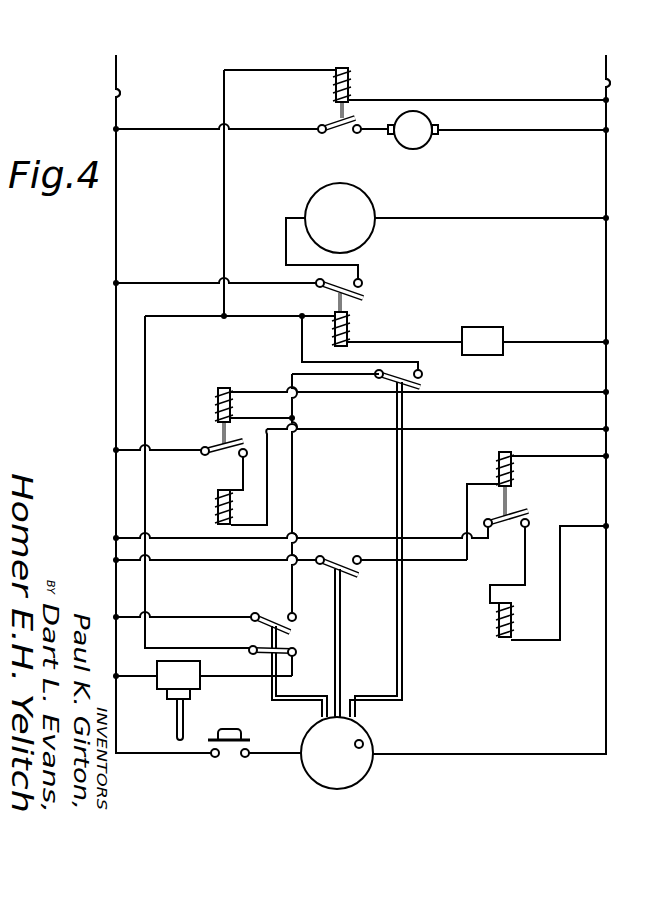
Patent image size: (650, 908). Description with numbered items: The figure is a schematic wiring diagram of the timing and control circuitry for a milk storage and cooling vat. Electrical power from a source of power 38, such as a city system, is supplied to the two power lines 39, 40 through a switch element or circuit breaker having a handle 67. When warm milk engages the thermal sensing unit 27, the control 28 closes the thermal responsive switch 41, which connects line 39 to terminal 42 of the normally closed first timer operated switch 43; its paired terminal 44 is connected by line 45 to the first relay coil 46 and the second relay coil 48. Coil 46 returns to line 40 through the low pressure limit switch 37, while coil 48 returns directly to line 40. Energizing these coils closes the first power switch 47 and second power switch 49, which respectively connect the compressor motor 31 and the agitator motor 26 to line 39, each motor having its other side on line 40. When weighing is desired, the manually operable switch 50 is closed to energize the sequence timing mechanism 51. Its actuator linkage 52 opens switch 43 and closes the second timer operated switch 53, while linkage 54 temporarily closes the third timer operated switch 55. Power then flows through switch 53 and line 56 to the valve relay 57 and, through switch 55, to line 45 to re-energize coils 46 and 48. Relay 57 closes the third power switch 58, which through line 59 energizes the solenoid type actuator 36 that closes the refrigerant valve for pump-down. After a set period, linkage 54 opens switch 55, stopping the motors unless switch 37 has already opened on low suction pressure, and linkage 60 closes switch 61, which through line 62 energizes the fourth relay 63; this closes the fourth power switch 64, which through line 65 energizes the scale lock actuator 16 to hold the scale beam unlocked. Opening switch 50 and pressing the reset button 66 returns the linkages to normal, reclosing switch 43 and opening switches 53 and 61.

The scale lock actuator 16 is at (499, 630).
The second electric motor 26 is at (428, 142).
The thermal sensing unit 27 is at (177, 722).
The control 28 is at (190, 695).
The first electric motor 31 is at (372, 210).
The solenoid type actuator 36 is at (218, 503).
The low pressure limit switch 37 is at (485, 327).
The source of power 38 is at (116, 63).
The power line 39 is at (116, 388).
The power line 40 is at (606, 300).
The thermal responsive switch 41 is at (165, 668).
The terminal 42 is at (294, 656).
The first timer operated switch 43 is at (268, 647).
The terminal 44 is at (256, 652).
The line 45 is at (224, 216).
The first relay coil 46 is at (350, 316).
The first power switch 47 is at (366, 298).
The second relay coil 48 is at (348, 70).
The second power switch 49 is at (337, 126).
The manually operable switch 50 is at (230, 745).
The sequence timing mechanism 51 is at (312, 771).
The actuator linkage 52 is at (271, 690).
The second timer operated switch 53 is at (270, 622).
The actuator linkage 54 is at (397, 466).
The third timer operated switch 55 is at (424, 381).
The line 56 is at (252, 416).
The valve relay 57 is at (218, 391).
The third power switch 58 is at (213, 447).
The line 59 is at (240, 471).
The linkage 60 is at (340, 613).
The switch 61 is at (337, 573).
The line 62 is at (426, 562).
The fourth relay 63 is at (499, 457).
The fourth power switch 64 is at (530, 512).
The line 65 is at (525, 560).
The reset button 66 is at (365, 745).
The handle 67 is at (112, 92).